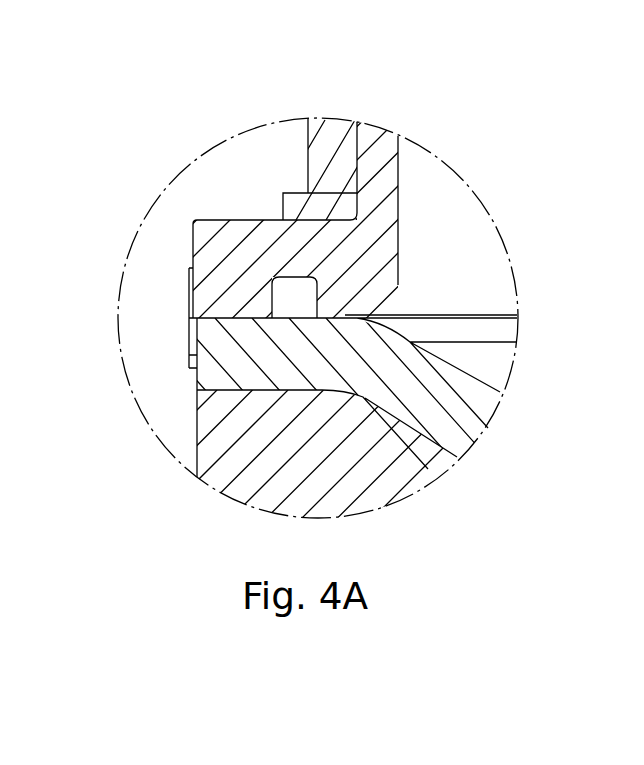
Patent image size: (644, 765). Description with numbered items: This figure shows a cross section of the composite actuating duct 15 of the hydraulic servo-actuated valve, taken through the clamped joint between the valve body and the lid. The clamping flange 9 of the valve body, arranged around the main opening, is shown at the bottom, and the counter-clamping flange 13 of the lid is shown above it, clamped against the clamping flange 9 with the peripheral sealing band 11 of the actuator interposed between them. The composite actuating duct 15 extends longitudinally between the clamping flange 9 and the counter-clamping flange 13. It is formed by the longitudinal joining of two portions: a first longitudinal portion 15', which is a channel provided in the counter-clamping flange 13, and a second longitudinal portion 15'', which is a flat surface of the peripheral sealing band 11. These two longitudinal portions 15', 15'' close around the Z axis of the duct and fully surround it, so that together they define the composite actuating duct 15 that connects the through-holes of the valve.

The clamping flange 9 is at (253, 482).
The peripheral sealing band 11 is at (188, 348).
The counter-clamping flange 13 is at (247, 227).
The composite actuating duct 15 is at (405, 189).
The first longitudinal portion 15' is at (427, 336).
The second longitudinal portion 15'' is at (453, 254).